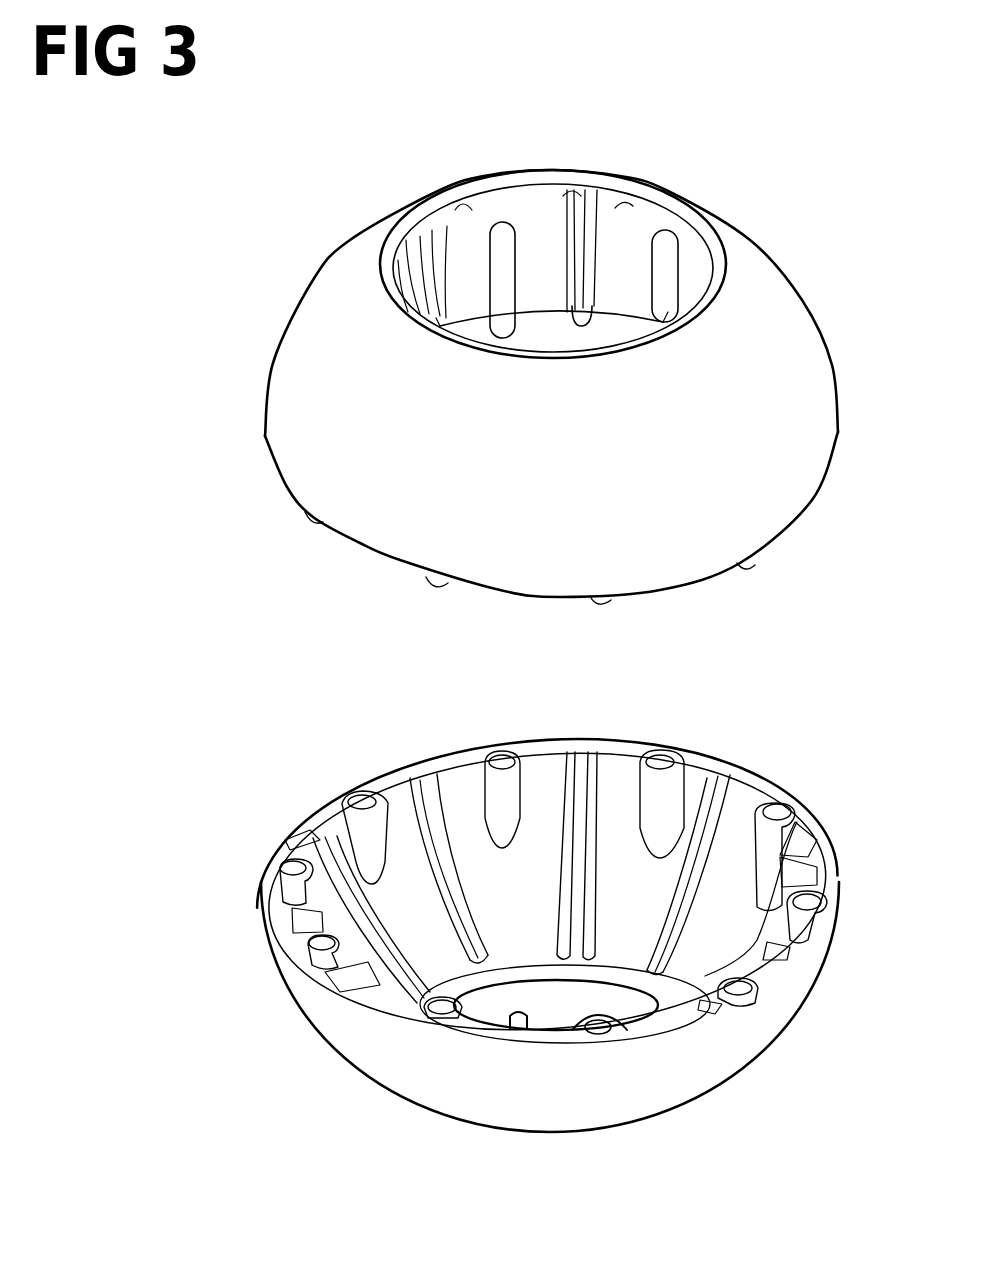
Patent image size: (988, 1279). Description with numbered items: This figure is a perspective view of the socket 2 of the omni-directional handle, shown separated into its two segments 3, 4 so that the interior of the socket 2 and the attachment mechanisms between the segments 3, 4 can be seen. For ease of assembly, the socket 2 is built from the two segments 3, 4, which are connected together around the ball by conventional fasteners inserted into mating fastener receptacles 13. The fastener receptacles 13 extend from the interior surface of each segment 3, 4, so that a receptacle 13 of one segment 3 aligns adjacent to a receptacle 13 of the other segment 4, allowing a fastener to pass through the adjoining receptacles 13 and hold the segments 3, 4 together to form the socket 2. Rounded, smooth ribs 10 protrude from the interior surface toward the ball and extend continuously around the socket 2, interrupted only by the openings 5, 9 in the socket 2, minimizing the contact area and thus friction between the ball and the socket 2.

The socket 2 is at (207, 412).
The socket segment 3 is at (335, 375).
The socket segment 4 is at (342, 1017).
The opening in the socket 5 is at (558, 1007).
The opening in the socket 9 is at (609, 264).
The rib 10 is at (577, 327).
The fastener receptacle 13 is at (503, 328).